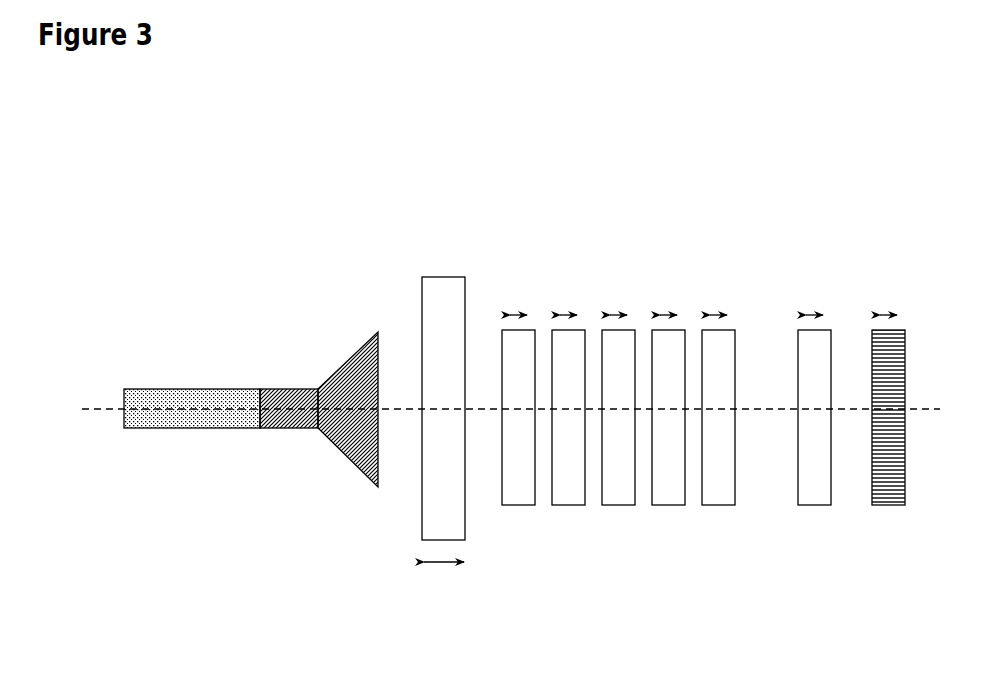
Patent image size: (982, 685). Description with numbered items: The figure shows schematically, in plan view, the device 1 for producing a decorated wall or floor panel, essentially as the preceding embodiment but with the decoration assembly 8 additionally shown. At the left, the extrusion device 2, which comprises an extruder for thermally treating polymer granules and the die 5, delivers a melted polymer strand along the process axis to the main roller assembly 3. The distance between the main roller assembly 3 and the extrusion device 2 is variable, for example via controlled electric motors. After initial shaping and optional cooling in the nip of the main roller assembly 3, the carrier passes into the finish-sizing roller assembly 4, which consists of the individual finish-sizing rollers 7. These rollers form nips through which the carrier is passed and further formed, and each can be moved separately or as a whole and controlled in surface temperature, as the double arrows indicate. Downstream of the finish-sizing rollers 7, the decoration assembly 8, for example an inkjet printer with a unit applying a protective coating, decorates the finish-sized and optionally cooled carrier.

The device 1 is at (735, 230).
The extrusion device 2 is at (167, 307).
The main roller assembly 3 is at (422, 258).
The finish-sizing roller assembly 4 is at (608, 267).
The die 5 is at (327, 473).
The finish-sizing rollers 7 is at (712, 523).
The decoration assembly 8 is at (883, 523).